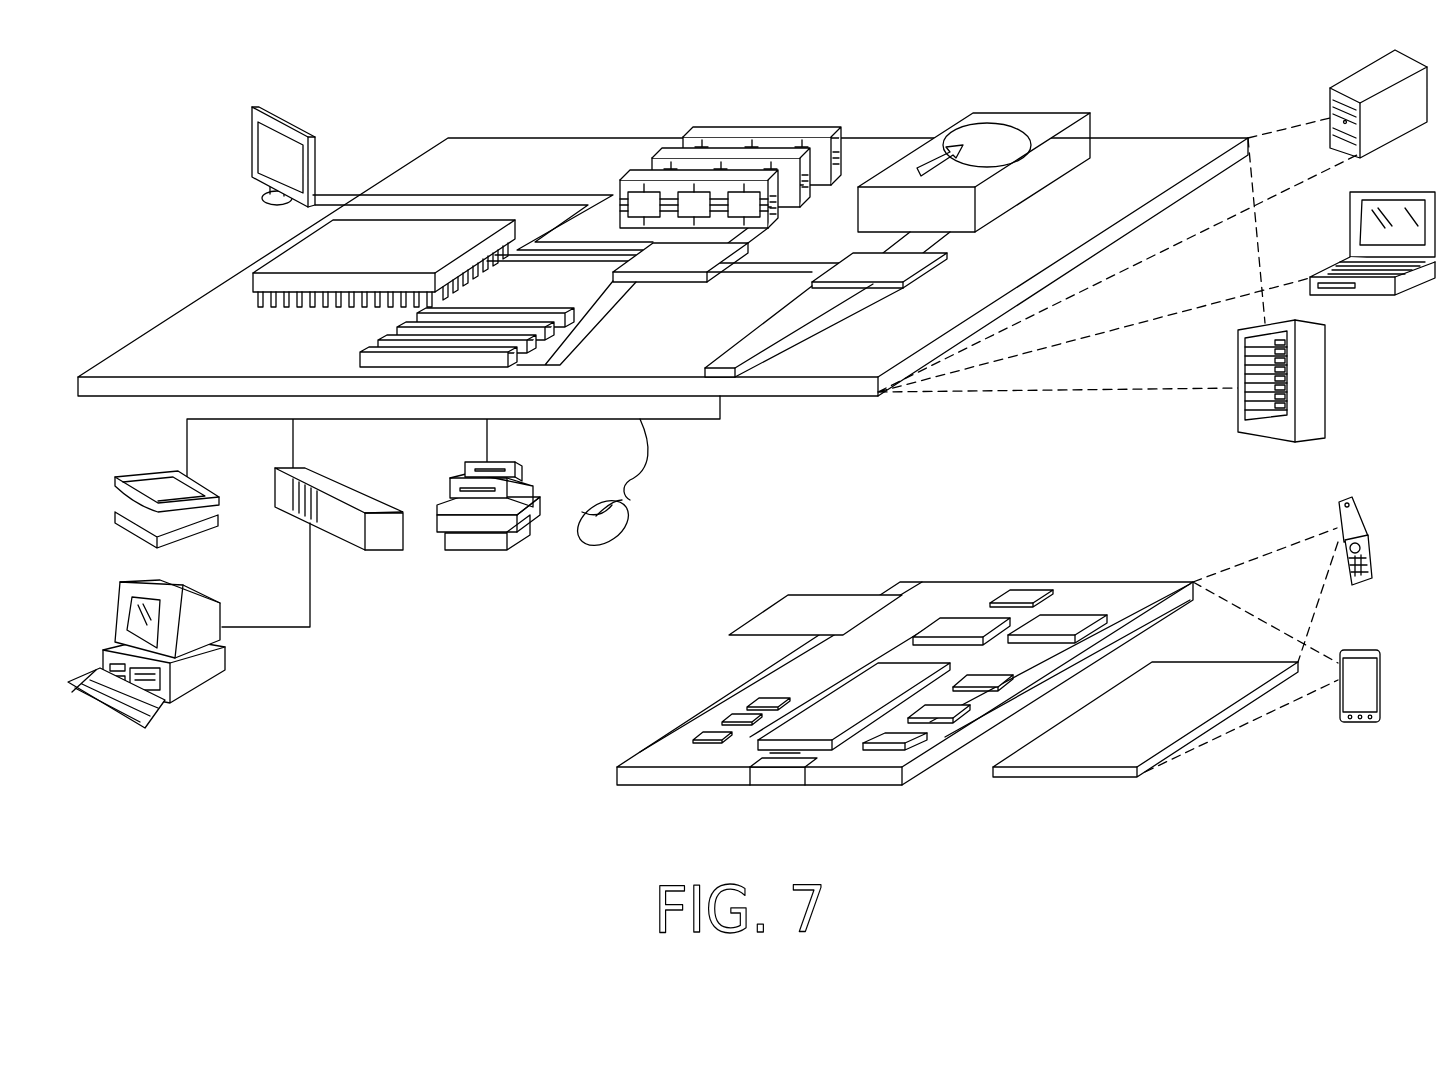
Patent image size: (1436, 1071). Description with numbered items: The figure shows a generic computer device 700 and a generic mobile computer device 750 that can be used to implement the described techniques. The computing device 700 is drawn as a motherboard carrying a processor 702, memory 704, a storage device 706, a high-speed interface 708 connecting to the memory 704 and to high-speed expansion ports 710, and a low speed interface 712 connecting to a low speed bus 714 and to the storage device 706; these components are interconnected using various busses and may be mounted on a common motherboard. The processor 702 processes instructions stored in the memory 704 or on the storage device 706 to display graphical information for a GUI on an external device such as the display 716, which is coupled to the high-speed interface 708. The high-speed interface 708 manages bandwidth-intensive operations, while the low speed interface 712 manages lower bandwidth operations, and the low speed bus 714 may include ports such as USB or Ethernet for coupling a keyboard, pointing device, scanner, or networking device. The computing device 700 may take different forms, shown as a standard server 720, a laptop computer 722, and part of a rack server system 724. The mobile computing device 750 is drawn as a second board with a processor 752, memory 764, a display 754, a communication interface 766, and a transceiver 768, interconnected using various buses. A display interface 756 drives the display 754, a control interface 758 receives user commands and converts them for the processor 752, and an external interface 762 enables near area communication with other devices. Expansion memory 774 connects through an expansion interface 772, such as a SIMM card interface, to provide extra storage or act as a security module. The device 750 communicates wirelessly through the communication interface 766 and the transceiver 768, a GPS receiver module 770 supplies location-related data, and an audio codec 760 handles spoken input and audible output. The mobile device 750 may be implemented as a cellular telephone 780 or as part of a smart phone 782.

The computing device 700 is at (397, 90).
The processor 702 is at (278, 252).
The memory 704 is at (767, 128).
The storage device 706 is at (1018, 110).
The high-speed interface 708 is at (693, 256).
The high-speed expansion ports 710 is at (387, 337).
The low speed interface 712 is at (850, 260).
The low speed bus 714 is at (728, 360).
The display 716 is at (257, 104).
The standard server 720 is at (1352, 82).
The laptop computer 722 is at (1410, 190).
The rack server system 724 is at (1325, 380).
The mobile computing device 750 is at (570, 790).
The processor 752 is at (820, 712).
The display 754 is at (1188, 678).
The display interface 756 is at (912, 738).
The control interface 758 is at (945, 712).
The audio codec 760 is at (993, 673).
The external interface 762 is at (779, 770).
The memory 764 is at (722, 718).
The communication interface 766 is at (965, 617).
The transceiver 768 is at (1062, 615).
The GPS receiver module 770 is at (1020, 588).
The expansion interface 772 is at (882, 595).
The expansion memory 774 is at (792, 592).
The cellular telephone 780 is at (1348, 498).
The smart phone 782 is at (1352, 650).